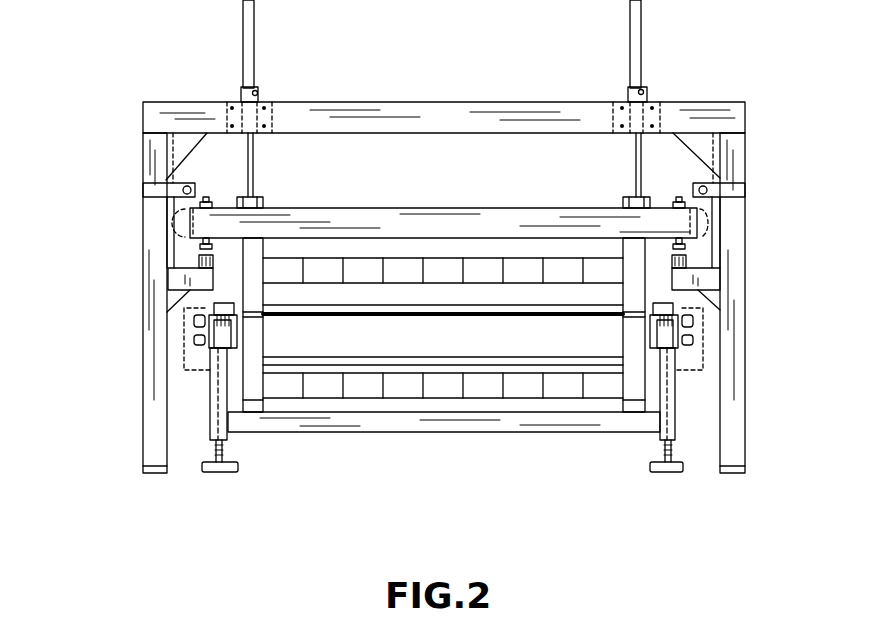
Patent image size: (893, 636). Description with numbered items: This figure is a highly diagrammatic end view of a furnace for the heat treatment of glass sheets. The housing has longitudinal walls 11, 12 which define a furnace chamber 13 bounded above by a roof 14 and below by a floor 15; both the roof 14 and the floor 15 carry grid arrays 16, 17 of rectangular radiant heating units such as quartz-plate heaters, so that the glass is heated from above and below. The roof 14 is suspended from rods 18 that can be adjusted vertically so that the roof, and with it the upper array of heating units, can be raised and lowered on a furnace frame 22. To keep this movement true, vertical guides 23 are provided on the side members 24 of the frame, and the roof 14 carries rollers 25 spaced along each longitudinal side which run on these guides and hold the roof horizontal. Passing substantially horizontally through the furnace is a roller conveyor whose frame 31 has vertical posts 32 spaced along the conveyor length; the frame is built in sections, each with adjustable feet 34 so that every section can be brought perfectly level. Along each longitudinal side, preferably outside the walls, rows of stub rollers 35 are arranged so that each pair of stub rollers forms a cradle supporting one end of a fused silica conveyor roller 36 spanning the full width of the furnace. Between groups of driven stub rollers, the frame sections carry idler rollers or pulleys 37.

The longitudinal wall 11 is at (253, 342).
The longitudinal wall 12 is at (635, 367).
The furnace chamber 13 is at (548, 292).
The roof 14 is at (462, 245).
The floor 15 is at (430, 405).
The grid array of radiant heating units 16 is at (528, 277).
The grid array of radiant heating units 17 is at (520, 385).
The rod 18 is at (254, 164).
The furnace frame 22 is at (169, 110).
The vertical guide 23 is at (163, 205).
The side member 24 is at (148, 430).
The roller 25 is at (167, 222).
The frame 31 is at (370, 437).
The vertical post 32 is at (213, 428).
The adjustable foot 34 is at (222, 447).
The stub roller 35 is at (222, 310).
The fused silica conveyor roller 36 is at (365, 315).
The idler roller or pulley 37 is at (195, 360).